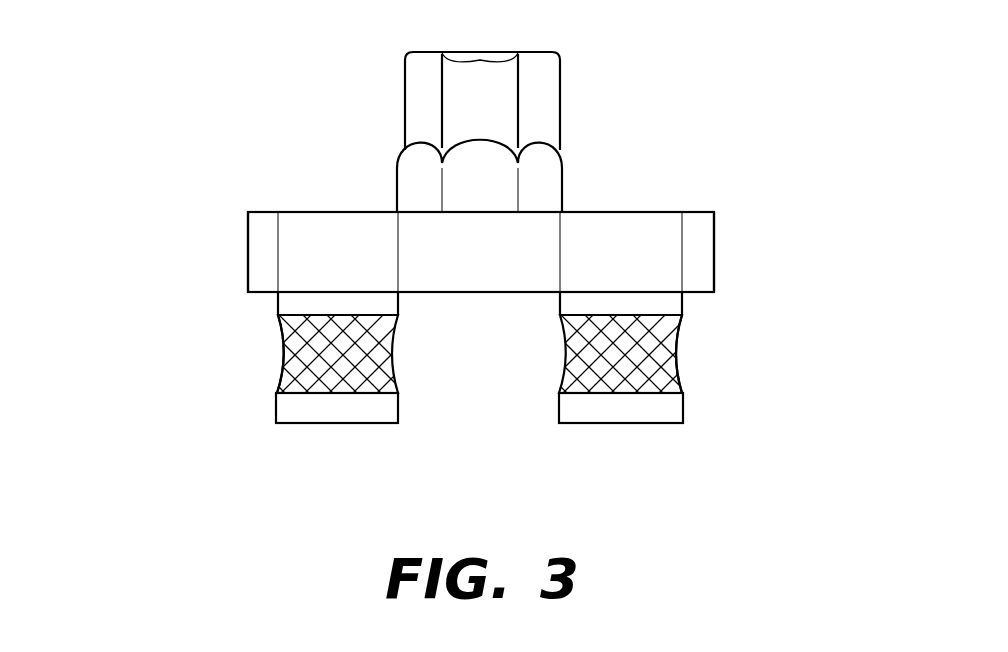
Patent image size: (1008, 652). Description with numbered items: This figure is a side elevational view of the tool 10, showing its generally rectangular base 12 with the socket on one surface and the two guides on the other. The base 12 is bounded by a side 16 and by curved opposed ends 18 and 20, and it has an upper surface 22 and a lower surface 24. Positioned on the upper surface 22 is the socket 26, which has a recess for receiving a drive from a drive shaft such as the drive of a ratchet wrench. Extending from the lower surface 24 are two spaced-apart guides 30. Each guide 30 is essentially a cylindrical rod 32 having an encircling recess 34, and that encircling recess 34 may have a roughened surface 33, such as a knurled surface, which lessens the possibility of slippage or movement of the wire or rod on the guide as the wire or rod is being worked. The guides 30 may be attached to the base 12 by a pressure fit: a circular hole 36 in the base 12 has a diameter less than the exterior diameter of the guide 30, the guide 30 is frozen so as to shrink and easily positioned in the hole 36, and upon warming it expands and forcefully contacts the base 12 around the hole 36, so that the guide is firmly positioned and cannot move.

The tool 10 is at (505, 294).
The base 12 is at (722, 260).
The side 16 is at (425, 248).
The end 18 is at (248, 255).
The end 20 is at (713, 272).
The upper surface 22 is at (262, 212).
The lower surface 24 is at (262, 294).
The socket 26 is at (565, 142).
The guide 30 is at (350, 425).
The cylindrical rod 32 is at (366, 362).
The roughened surface 33 is at (650, 395).
The encircling recess 34 is at (274, 353).
The circular hole 36 is at (280, 212).